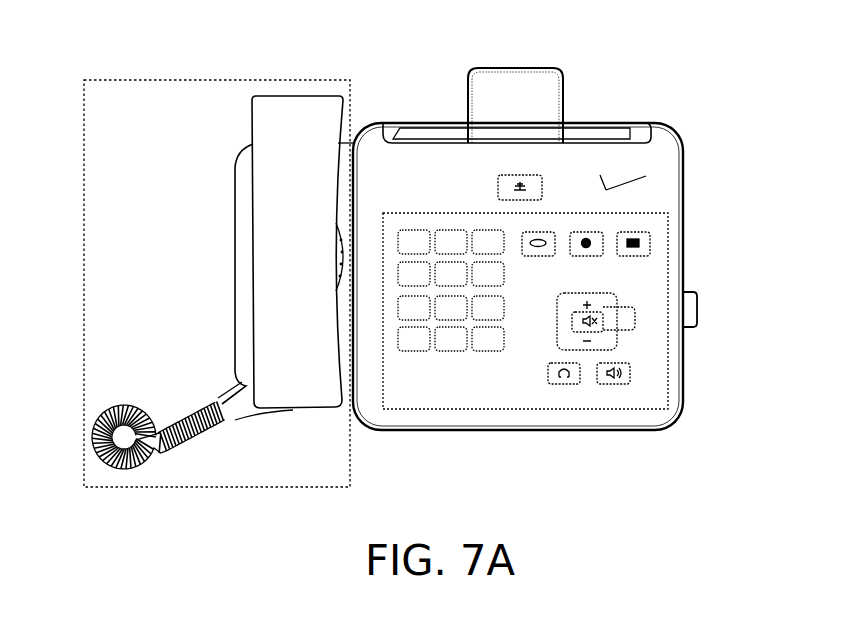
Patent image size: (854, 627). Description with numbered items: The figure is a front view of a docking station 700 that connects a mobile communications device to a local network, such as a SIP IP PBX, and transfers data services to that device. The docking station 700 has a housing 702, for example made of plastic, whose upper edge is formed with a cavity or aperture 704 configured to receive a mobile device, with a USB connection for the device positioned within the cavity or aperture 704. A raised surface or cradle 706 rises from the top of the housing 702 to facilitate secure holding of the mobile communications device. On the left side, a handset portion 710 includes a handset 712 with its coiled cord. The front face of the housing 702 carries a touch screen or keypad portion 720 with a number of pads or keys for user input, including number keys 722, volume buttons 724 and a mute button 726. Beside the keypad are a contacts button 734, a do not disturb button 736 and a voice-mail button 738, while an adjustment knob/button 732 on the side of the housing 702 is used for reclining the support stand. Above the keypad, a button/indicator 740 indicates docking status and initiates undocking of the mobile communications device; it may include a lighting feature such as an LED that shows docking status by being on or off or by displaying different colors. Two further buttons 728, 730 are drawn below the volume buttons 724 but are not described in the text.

The docking station 700 is at (124, 47).
The housing 702 is at (673, 195).
The cavity or aperture 704 is at (600, 118).
The raised surface or cradle 706 is at (563, 78).
The handset portion 710 is at (350, 462).
The handset 712 is at (310, 173).
The touch screen or keypad portion 720 is at (538, 411).
The number keys 722 is at (395, 297).
The volume buttons 724 is at (636, 318).
The mute button 726 is at (605, 332).
The headset button 728 is at (578, 384).
The speaker button 730 is at (628, 376).
The adjustment knob/button 732 is at (697, 302).
The contacts button 734 is at (645, 243).
The do not disturb button 736 is at (600, 232).
The voice-mail button 738 is at (533, 258).
The button/indicator 740 is at (498, 187).